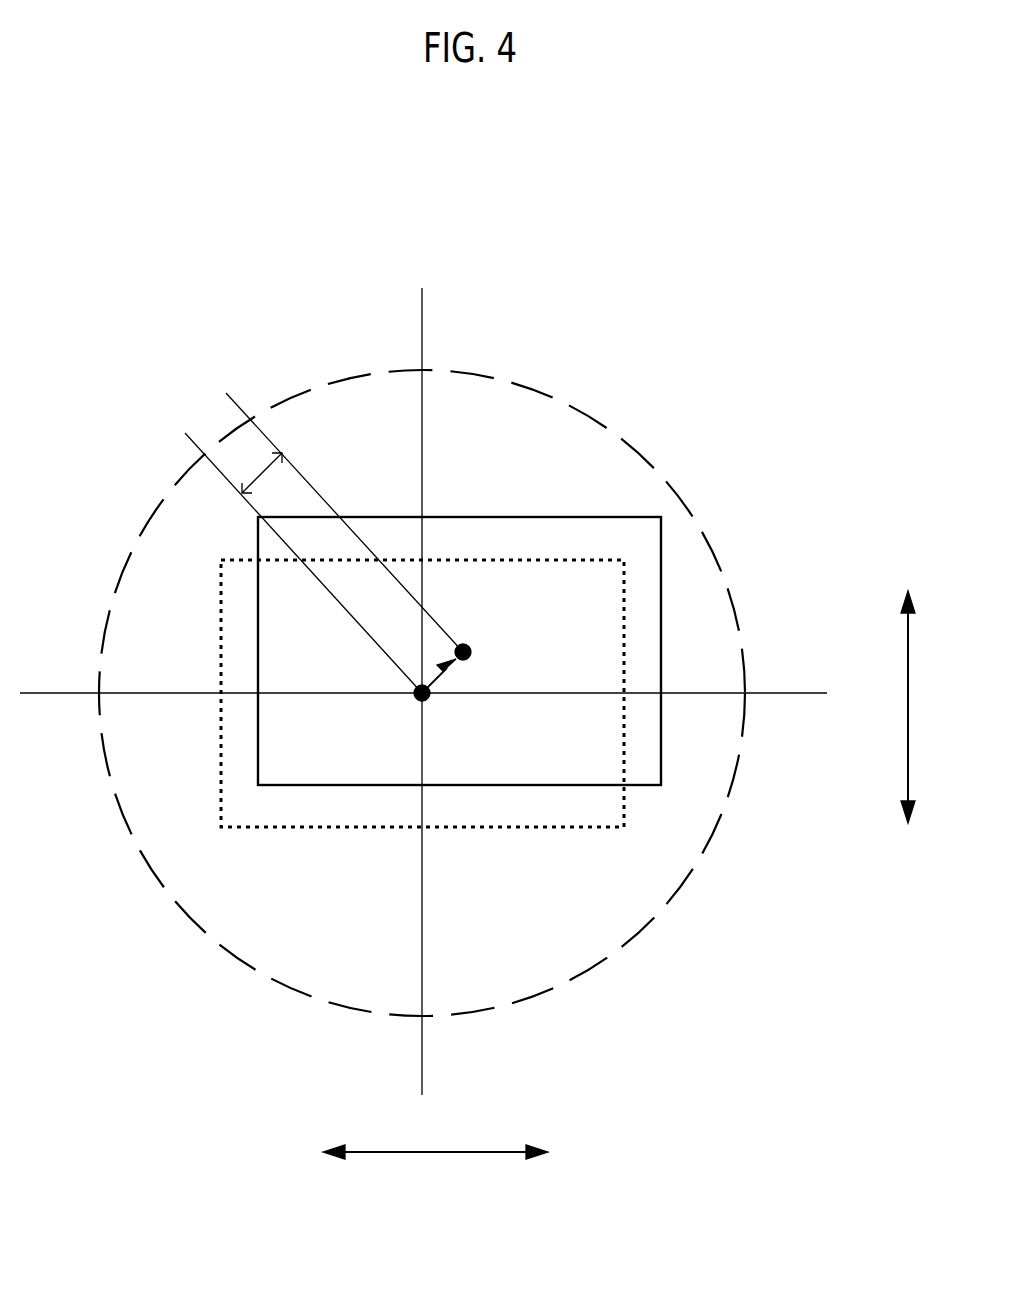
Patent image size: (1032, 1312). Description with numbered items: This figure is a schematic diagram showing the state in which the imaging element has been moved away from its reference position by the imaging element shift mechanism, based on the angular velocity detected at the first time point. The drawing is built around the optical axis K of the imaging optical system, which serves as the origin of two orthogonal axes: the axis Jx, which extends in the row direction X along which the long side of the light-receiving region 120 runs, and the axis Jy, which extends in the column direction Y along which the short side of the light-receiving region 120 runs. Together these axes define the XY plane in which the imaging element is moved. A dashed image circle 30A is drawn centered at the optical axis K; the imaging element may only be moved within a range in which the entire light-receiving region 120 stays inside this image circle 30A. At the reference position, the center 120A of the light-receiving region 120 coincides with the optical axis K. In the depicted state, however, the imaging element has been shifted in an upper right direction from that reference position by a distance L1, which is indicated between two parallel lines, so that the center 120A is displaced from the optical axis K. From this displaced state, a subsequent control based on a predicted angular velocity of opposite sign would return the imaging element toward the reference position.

The image circle 30A is at (593, 422).
The light-receiving region 120 is at (323, 785).
The center of the light-receiving region 120A is at (463, 652).
The optical axis K is at (422, 693).
The distance L1 is at (262, 468).
The axis Jx is at (814, 694).
The axis Jy is at (422, 313).
The row direction X is at (435, 1171).
The column direction Y is at (923, 707).